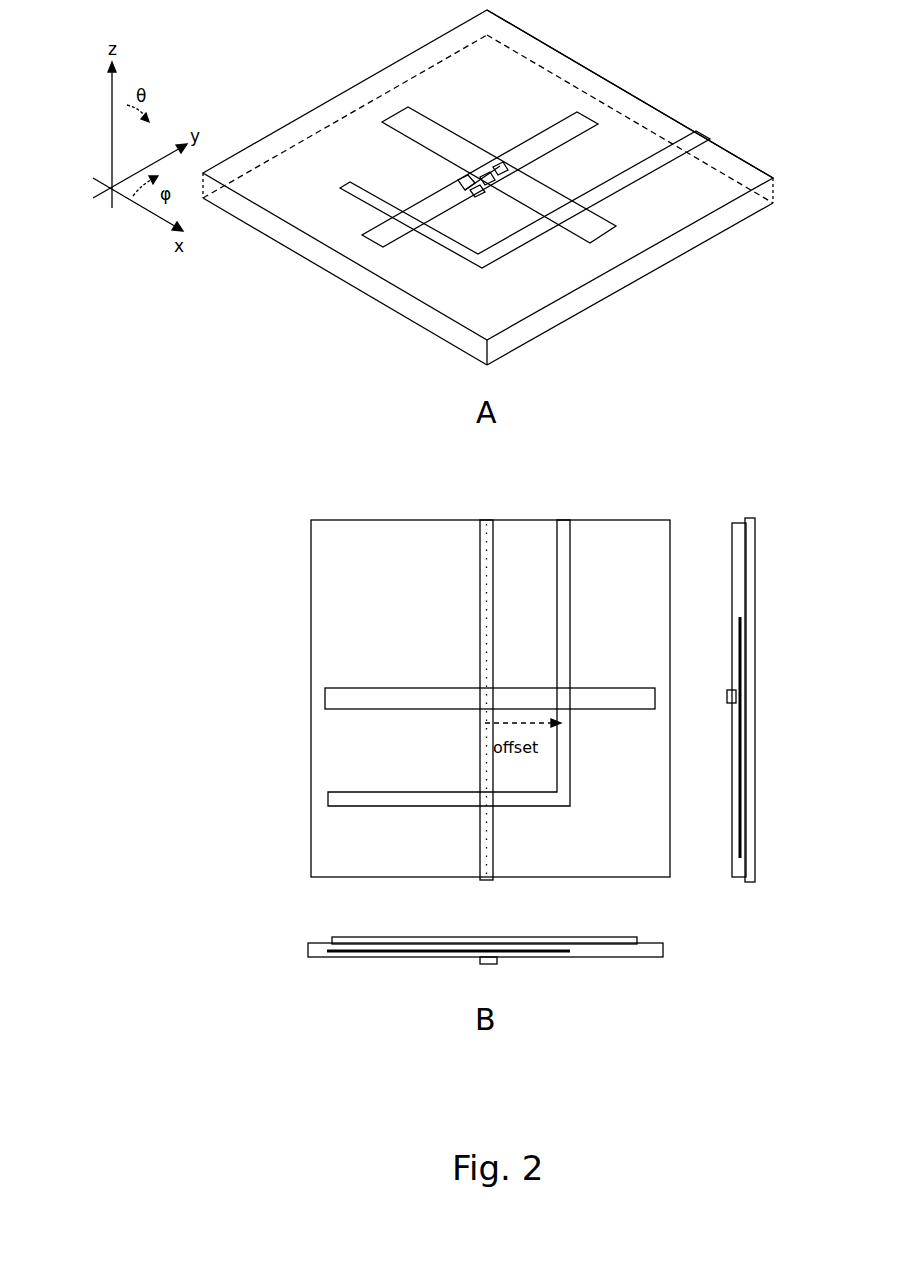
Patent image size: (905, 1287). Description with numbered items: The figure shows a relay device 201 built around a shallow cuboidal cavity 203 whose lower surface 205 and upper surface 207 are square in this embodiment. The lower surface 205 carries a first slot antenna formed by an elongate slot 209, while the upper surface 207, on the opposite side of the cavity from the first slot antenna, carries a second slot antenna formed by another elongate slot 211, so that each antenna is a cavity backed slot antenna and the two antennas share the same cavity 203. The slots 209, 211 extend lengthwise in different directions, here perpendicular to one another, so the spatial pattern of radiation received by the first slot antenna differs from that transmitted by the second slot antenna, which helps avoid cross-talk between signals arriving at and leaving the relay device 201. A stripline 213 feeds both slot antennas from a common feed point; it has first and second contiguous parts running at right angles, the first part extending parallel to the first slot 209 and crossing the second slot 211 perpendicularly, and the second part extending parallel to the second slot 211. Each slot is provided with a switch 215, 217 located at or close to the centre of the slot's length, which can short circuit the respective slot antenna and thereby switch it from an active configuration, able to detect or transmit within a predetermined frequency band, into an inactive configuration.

The relay device 201 is at (692, 90).
The shallow cuboidal cavity 203 is at (370, 97).
The lower surface 205 is at (285, 245).
The upper surface 207 is at (535, 37).
The elongate slot 209 is at (393, 246).
The elongate slot 211 is at (423, 120).
The stripline 213 is at (533, 243).
The switch 215 is at (462, 180).
The switch 217 is at (510, 167).